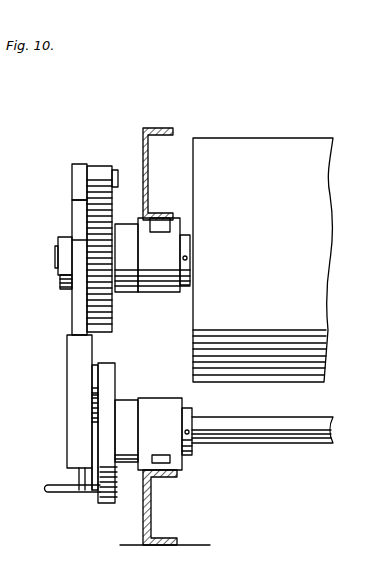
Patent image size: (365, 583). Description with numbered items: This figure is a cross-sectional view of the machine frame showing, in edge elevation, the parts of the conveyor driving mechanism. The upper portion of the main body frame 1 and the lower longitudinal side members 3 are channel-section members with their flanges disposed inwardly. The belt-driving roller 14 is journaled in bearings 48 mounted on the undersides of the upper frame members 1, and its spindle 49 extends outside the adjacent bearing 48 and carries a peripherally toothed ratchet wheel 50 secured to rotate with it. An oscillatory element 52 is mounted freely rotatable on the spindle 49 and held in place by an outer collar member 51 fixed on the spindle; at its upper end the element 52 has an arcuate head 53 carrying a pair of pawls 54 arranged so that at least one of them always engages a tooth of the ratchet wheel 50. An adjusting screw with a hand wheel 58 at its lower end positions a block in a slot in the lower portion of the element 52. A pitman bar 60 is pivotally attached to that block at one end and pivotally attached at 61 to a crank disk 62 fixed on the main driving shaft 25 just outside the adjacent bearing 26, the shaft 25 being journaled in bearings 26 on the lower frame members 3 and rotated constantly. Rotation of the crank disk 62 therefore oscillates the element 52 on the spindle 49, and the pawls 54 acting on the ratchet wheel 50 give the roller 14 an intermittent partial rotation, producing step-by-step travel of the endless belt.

The upper portion of the main body frame 1 is at (147, 128).
The longitudinal lower side members 3 is at (151, 521).
The belt-driving roller 14 is at (240, 145).
The main driving shaft 25 is at (253, 444).
The bearings 26 is at (170, 408).
The bearings 48 is at (153, 292).
The spindle 49 is at (58, 260).
The ratchet wheel 50 is at (72, 210).
The outer collar member 51 is at (62, 284).
The oscillatory element 52 is at (72, 366).
The arcuate head 53 is at (80, 188).
The pawls 54 is at (95, 170).
The hand wheel 58 is at (80, 493).
The pitman bar 60 is at (93, 421).
The pivotal attachment 61 is at (98, 366).
The crank disk 62 is at (110, 374).